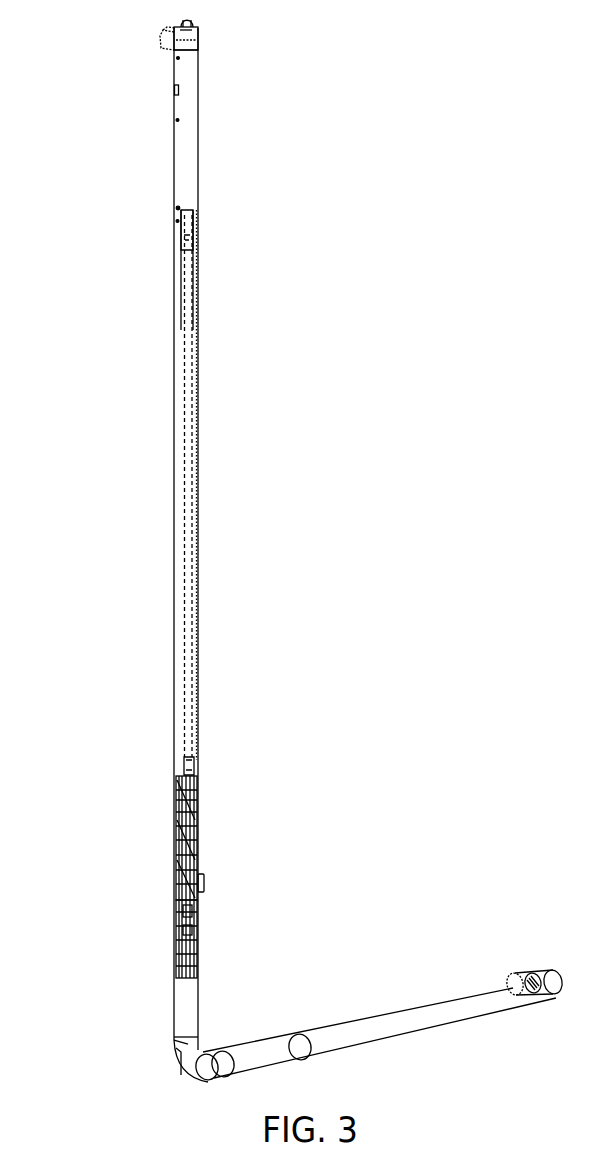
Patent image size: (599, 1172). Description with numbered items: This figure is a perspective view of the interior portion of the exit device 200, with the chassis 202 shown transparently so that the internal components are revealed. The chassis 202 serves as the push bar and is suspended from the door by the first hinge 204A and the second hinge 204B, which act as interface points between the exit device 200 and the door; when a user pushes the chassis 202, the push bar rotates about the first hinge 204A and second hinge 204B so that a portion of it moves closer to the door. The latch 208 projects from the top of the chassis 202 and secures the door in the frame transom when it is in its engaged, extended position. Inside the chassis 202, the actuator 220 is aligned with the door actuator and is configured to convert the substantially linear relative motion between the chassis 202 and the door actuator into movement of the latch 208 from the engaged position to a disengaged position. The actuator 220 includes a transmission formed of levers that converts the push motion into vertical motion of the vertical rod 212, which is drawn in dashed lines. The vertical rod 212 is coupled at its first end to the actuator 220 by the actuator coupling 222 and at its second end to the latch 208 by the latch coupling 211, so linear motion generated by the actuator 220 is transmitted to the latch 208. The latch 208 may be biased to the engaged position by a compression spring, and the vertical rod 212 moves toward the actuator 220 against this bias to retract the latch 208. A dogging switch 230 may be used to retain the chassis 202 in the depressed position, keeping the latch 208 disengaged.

The exit device 200 is at (284, 199).
The chassis 202 is at (348, 1020).
The first hinge 204A is at (164, 34).
The second hinge 204B is at (512, 972).
The latch 208 is at (199, 30).
The latch coupling 211 is at (190, 248).
The vertical rod 212 is at (189, 558).
The actuator 220 is at (213, 884).
The actuator coupling 222 is at (192, 767).
The dogging switch 230 is at (168, 962).